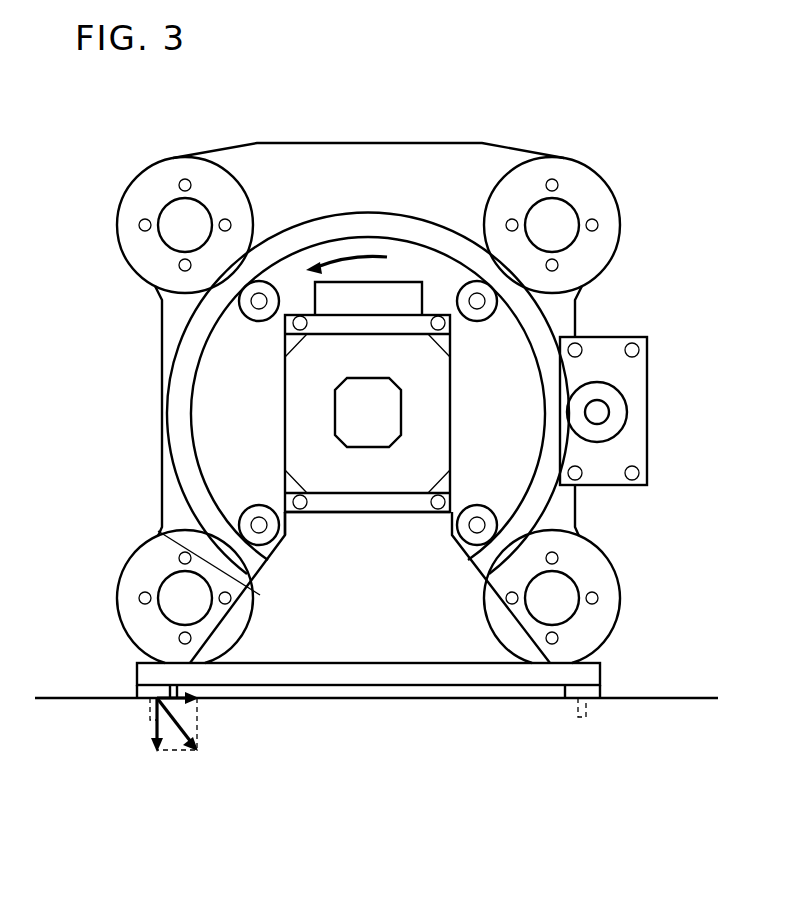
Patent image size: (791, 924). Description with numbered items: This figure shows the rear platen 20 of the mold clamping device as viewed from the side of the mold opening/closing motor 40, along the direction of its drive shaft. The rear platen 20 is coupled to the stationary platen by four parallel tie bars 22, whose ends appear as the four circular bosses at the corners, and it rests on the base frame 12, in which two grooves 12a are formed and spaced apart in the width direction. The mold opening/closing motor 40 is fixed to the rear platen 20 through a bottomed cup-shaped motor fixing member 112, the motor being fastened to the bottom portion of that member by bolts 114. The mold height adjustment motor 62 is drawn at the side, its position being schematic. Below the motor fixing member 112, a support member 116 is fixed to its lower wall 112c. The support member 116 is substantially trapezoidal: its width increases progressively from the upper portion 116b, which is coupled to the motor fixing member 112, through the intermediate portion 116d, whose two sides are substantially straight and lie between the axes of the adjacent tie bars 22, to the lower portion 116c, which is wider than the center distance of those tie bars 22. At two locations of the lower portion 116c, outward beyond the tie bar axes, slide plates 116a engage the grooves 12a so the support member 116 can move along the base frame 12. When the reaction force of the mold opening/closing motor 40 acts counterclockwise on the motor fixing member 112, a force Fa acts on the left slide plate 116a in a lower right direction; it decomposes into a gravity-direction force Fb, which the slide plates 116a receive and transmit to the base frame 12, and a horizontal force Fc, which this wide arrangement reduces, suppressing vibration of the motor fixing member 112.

The rear platen 20 is at (358, 163).
The tie bars 22 is at (175, 215).
The motor fixing member 112 is at (285, 340).
The bolts 114 is at (300, 316).
The mold opening/closing motor 40 is at (305, 413).
The lower wall 112c is at (372, 513).
The support member 116 is at (496, 584).
The upper portion 116b is at (293, 523).
The intermediate portion 116d is at (157, 530).
The mold height adjustment motor 62 is at (617, 410).
The lower portion 116c is at (373, 676).
The slide plates 116a is at (145, 692).
The base frame 12 is at (680, 693).
The grooves 12a is at (150, 710).
The force Fa is at (197, 722).
The force of gravity direction component Fb is at (148, 727).
The force of horizontal direction component Fc is at (175, 693).